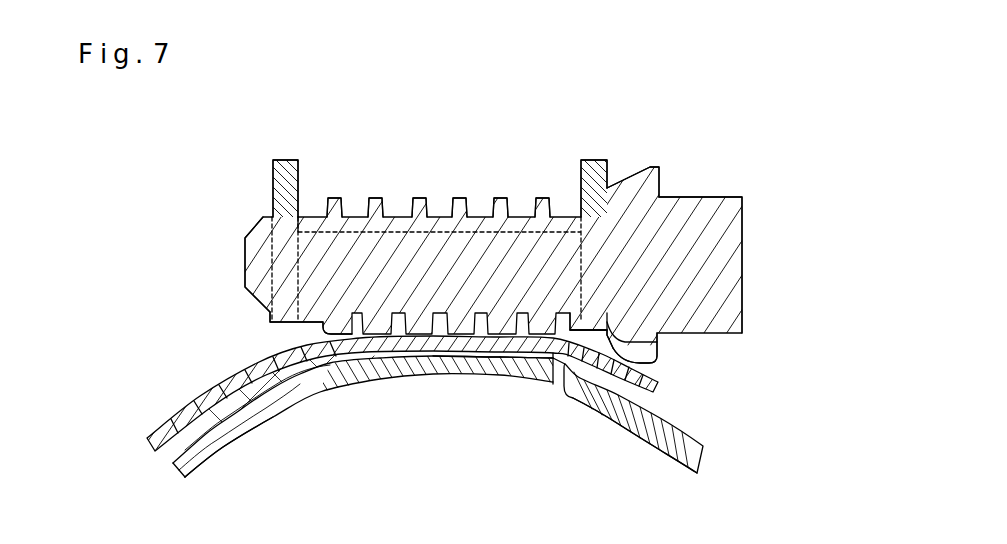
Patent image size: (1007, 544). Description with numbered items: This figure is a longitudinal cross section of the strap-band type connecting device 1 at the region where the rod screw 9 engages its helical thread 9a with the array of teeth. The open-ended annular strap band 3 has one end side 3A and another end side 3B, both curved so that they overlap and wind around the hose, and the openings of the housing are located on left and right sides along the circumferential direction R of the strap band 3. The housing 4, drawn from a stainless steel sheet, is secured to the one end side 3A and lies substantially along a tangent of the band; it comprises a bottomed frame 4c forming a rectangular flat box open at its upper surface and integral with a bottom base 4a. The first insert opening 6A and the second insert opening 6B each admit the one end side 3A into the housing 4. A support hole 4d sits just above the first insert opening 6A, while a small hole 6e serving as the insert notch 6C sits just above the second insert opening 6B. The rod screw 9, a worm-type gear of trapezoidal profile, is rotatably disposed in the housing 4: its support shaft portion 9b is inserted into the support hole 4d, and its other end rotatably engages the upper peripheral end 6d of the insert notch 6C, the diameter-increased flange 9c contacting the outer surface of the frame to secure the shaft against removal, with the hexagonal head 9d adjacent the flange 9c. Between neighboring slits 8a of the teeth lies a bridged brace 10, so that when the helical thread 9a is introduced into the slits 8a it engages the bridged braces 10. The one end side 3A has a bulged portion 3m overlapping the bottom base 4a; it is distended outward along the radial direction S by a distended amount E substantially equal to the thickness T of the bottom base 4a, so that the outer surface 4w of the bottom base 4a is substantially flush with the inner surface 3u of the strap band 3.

The strap-band type connecting device 1 is at (520, 156).
The strap band 3 is at (591, 419).
The one end side 3A is at (207, 452).
The other end side 3B is at (165, 437).
The bulged portion 3m is at (397, 378).
The inner surface 3u is at (638, 428).
The housing 4 is at (418, 217).
The bottom base 4a is at (467, 369).
The bottomed frame 4c is at (273, 181).
The support hole 4d is at (290, 226).
The outer surface 4w is at (514, 378).
The first insert opening 6A is at (288, 325).
The second insert opening 6B is at (657, 362).
The insert notch 6C is at (607, 237).
The upper peripheral end 6d is at (711, 265).
The small hole 6e is at (607, 322).
The slits 8a is at (255, 418).
The rod screw 9 is at (678, 142).
The helical thread 9a is at (332, 198).
The support shaft portion 9b is at (250, 232).
The flange 9c is at (640, 184).
The hexagonal head 9d is at (688, 207).
The bridged brace 10 is at (257, 363).
The thickness T is at (283, 392).
The radial direction S is at (439, 160).
The circumferential direction R is at (180, 364).
The distended amount E is at (767, 415).